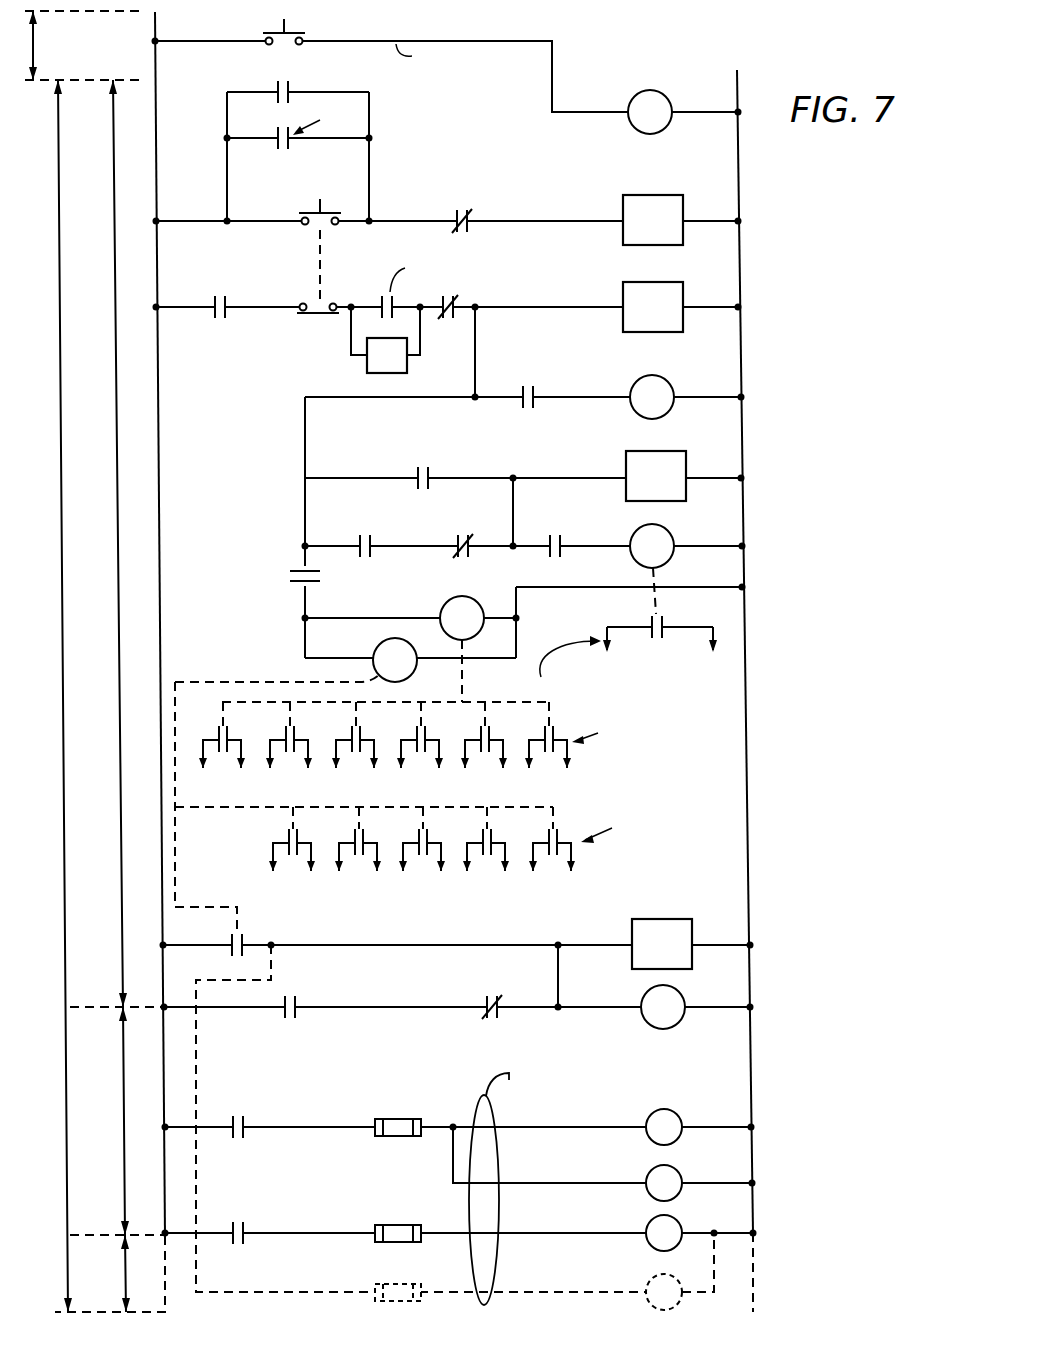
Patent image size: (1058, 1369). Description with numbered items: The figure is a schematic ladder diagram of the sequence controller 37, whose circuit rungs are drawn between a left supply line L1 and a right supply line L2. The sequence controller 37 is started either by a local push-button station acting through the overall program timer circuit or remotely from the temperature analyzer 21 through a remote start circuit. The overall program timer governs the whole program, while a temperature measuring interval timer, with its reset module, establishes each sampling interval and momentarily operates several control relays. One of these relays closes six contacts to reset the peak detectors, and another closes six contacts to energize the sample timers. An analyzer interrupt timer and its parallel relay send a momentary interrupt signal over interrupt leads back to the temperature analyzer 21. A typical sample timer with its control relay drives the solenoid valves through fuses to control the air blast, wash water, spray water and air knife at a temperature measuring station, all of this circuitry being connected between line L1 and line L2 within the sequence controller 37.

The temperature analyzer 21 is at (920, 630).
The sequence controller 37 is at (60, 425).
The power line L1 is at (157, 29).
The power line L2 is at (739, 88).